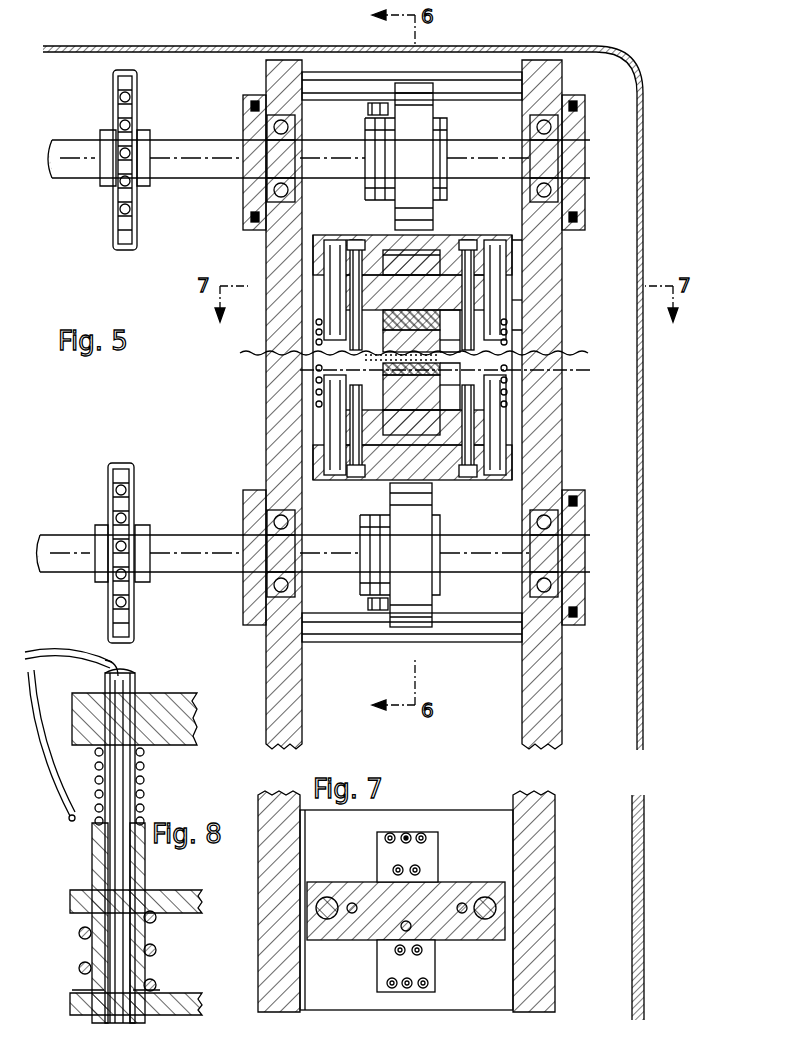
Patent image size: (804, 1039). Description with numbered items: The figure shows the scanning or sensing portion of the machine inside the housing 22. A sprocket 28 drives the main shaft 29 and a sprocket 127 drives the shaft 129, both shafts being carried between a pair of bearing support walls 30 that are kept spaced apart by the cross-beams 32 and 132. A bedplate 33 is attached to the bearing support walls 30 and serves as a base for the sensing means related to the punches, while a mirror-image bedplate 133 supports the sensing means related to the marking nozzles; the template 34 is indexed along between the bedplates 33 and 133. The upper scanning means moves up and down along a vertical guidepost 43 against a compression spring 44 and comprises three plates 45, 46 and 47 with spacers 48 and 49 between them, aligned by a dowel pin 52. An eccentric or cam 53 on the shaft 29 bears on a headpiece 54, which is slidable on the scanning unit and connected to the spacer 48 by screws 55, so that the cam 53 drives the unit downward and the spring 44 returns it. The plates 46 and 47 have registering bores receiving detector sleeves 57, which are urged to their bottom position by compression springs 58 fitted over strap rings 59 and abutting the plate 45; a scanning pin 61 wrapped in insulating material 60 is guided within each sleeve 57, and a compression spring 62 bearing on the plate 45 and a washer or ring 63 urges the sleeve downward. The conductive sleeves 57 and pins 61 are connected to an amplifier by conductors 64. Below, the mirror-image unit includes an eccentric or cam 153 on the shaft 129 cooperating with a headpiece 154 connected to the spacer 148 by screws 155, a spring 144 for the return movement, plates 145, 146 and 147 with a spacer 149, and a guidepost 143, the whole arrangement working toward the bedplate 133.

In FIG. 5, the housing 22 is at (637, 448).
In FIG. 7, the housing 22 is at (644, 862).
In FIG. 5, the sprocket 28 is at (133, 186).
In FIG. 5, the shaft 29 is at (209, 180).
In FIG. 5, the bearing support wall 30 is at (275, 368).
In FIG. 7, the bearing support wall 30 is at (270, 880).
In FIG. 5, the cross-beam 32 is at (334, 95).
In FIG. 7, the bedplate 33 is at (480, 815).
In FIG. 5, the template 34 is at (560, 370).
In FIG. 5, the vertical guidepost 43 is at (505, 290).
In FIG. 7, the vertical guidepost 43 is at (486, 920).
In FIG. 5, the compression spring 44 is at (335, 325).
In FIG. 5, the plate 45 is at (440, 270).
In FIG. 8, the plate 45 is at (174, 697).
In FIG. 5, the plate 46 is at (447, 326).
In FIG. 8, the plate 46 is at (188, 890).
In FIG. 7, the plate 46 is at (382, 862).
In FIG. 5, the plate 47 is at (447, 342).
In FIG. 8, the plate 47 is at (182, 993).
In FIG. 5, the spacer 48 is at (383, 326).
In FIG. 7, the spacer 48 is at (450, 888).
In FIG. 5, the spacer 49 is at (383, 342).
In FIG. 7, the dowel pin 52 is at (400, 928).
In FIG. 5, the eccentric or cam 53 is at (428, 110).
In FIG. 5, the headpiece 54 is at (378, 238).
In FIG. 5, the screw 55 is at (475, 240).
In FIG. 7, the screw 55 is at (352, 912).
In FIG. 8, the detector sleeve 57 is at (92, 866).
In FIG. 7, the detector sleeve 57 is at (392, 835).
In FIG. 8, the compression spring 58 is at (156, 950).
In FIG. 8, the strap ring 59 is at (84, 988).
In FIG. 8, the insulating material 60 is at (130, 874).
In FIG. 8, the scanning pin 61 is at (110, 950).
In FIG. 7, the scanning pin 61 is at (408, 835).
In FIG. 8, the compression spring 62 is at (145, 780).
In FIG. 8, the washer or ring 63 is at (98, 825).
In FIG. 8, the conductor 64 is at (50, 652).
In FIG. 5, the sprocket 127 is at (134, 582).
In FIG. 5, the shaft 129 is at (191, 538).
In FIG. 5, the cross-beam 132 is at (332, 630).
In FIG. 5, the bedplate 133 is at (510, 325).
In FIG. 5, the guidepost 143 is at (505, 388).
In FIG. 5, the spring 144 is at (335, 385).
In FIG. 5, the plate 145 is at (437, 445).
In FIG. 5, the plate 146 is at (446, 392).
In FIG. 5, the plate 147 is at (383, 372).
In FIG. 5, the spacer 148 is at (389, 418).
In FIG. 5, the spacer 149 is at (446, 372).
In FIG. 5, the eccentric or cam 153 is at (405, 515).
In FIG. 5, the headpiece 154 is at (354, 480).
In FIG. 5, the screw 155 is at (468, 480).